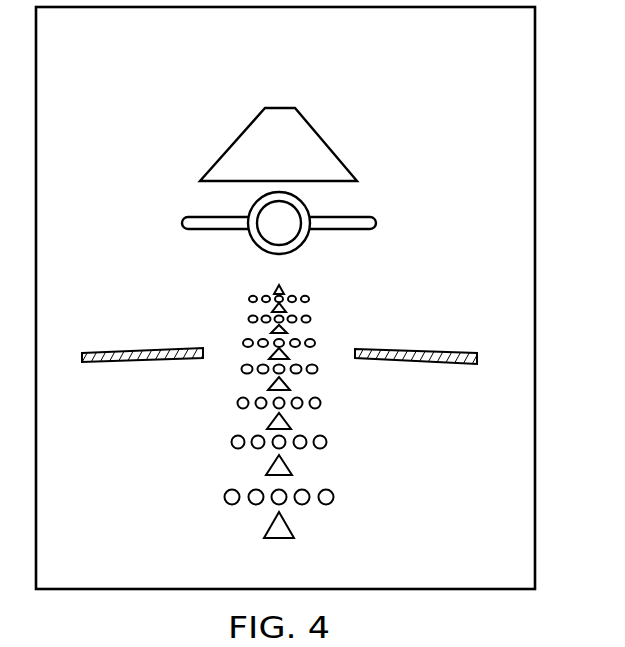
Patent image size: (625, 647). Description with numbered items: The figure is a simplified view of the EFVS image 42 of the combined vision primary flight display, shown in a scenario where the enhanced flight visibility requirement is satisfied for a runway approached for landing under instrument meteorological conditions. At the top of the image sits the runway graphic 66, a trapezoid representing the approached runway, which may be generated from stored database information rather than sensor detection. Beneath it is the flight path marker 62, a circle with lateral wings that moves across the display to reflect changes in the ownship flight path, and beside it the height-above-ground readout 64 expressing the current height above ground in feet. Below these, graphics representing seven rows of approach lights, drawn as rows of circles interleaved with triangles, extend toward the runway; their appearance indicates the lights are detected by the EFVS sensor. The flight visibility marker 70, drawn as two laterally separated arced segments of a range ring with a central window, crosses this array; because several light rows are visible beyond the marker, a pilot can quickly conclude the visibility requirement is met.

The EFVS image 42 is at (79, 52).
The flight path marker 62 is at (182, 222).
The height-above-ground readout 64 is at (412, 247).
The runway graphic 66 is at (313, 118).
The flight visibility marker 70 is at (184, 390).